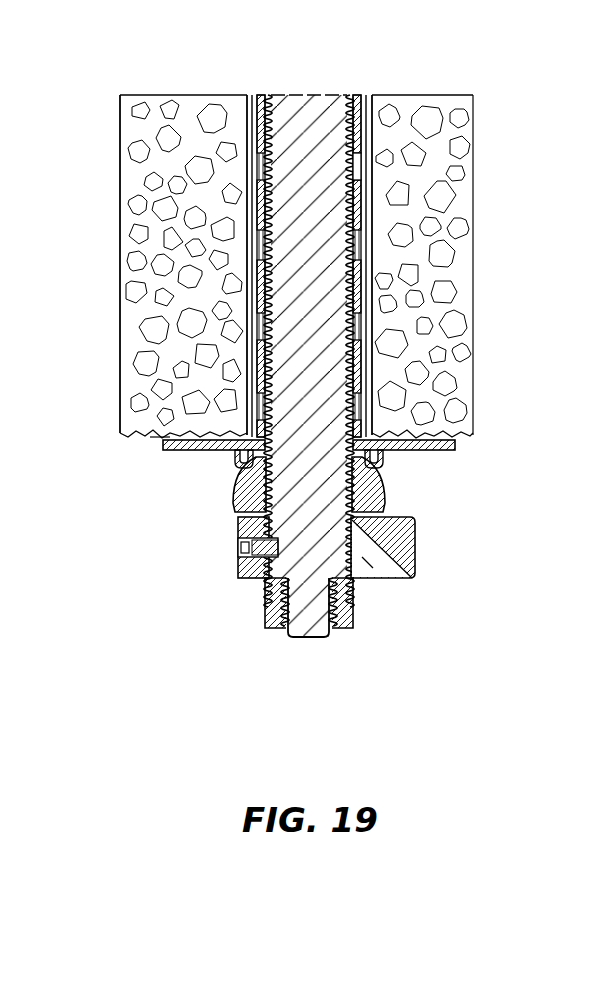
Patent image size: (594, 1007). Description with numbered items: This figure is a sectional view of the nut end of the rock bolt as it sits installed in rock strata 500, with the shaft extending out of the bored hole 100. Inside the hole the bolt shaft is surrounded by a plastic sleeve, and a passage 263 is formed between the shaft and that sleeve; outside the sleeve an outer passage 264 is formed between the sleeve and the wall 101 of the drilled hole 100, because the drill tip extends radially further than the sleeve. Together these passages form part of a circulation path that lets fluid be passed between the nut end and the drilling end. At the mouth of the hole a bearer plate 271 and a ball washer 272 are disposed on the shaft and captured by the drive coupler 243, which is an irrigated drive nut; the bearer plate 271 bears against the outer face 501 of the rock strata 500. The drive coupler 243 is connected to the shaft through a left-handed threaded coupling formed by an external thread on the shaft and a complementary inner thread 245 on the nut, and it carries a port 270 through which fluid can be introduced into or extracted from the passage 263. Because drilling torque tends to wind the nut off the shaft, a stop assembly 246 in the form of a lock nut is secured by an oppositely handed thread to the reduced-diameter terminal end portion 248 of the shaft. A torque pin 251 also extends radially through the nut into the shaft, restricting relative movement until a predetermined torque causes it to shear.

The rock strata 500 is at (231, 97).
The bored hole 100 is at (364, 97).
The wall of the drilled hole 101 is at (253, 97).
The passage 263 is at (357, 247).
The outer passage 264 is at (364, 163).
The bearer plate 271 is at (437, 452).
The ball washer 272 is at (383, 497).
The drive coupler 243 is at (414, 548).
The port 270 is at (363, 558).
The stop assembly 246 is at (341, 607).
The outer face of the rock strata 501 is at (157, 440).
The torque pin 251 is at (240, 530).
The inner thread 245 is at (262, 579).
The terminal end portion 248 is at (312, 627).